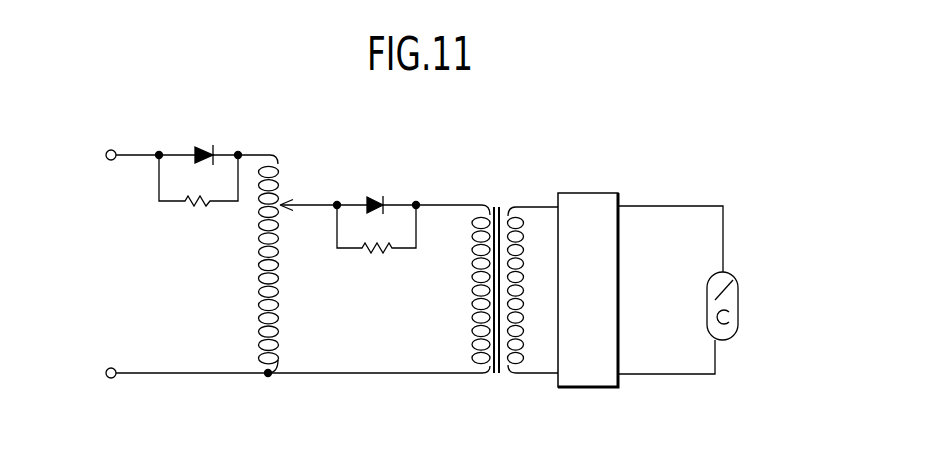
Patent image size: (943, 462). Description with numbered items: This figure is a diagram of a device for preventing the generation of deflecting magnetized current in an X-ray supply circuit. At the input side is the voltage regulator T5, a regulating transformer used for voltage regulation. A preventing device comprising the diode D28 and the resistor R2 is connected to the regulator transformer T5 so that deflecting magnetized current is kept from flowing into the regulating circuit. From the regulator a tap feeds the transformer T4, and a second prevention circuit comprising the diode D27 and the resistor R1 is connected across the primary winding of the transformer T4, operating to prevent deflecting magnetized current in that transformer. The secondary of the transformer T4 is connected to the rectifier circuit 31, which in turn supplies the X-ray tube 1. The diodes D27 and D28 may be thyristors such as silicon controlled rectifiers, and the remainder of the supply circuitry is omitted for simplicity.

The rectifier circuit 31 is at (592, 193).
The X-ray tube 1 is at (738, 307).
The diode D28 is at (204, 142).
The resistor R2 is at (198, 195).
The voltage regulator transformer T5 is at (283, 187).
The diode D27 is at (413, 192).
The resistor R1 is at (376, 245).
The transformer T4 is at (498, 205).